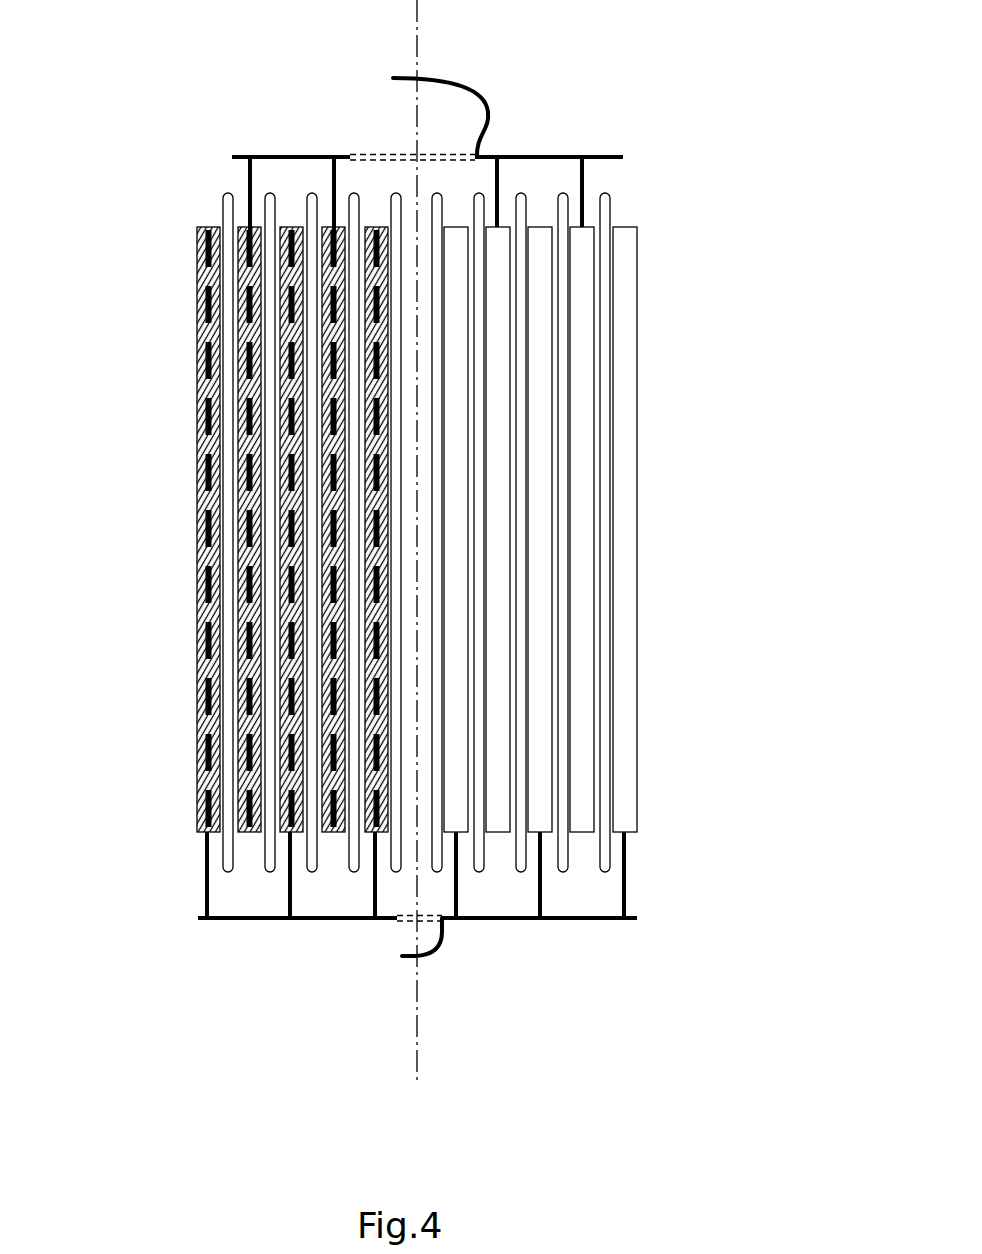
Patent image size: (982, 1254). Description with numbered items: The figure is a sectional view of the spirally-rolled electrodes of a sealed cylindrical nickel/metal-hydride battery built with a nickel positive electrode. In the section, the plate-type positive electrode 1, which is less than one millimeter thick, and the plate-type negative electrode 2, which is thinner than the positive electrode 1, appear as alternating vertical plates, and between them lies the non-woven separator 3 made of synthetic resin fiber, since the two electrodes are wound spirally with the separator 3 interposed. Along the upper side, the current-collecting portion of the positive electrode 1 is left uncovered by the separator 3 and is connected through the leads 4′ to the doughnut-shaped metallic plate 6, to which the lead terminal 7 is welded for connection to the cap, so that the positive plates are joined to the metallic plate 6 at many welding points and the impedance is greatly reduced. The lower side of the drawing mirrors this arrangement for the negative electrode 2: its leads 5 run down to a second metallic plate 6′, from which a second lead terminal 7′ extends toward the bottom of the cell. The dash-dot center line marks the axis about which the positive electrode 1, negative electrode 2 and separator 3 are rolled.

The positive electrode 1 is at (250, 272).
The negative electrode 2 is at (208, 385).
The separator 3 is at (277, 553).
The positive electrode lead 4′ is at (246, 185).
The negative electrode lead 5 is at (207, 877).
The metallic plate 6 is at (277, 155).
The negative current collecting bar 6′ is at (258, 921).
The lead terminal 7 is at (472, 90).
The negative terminal 7′ is at (443, 945).